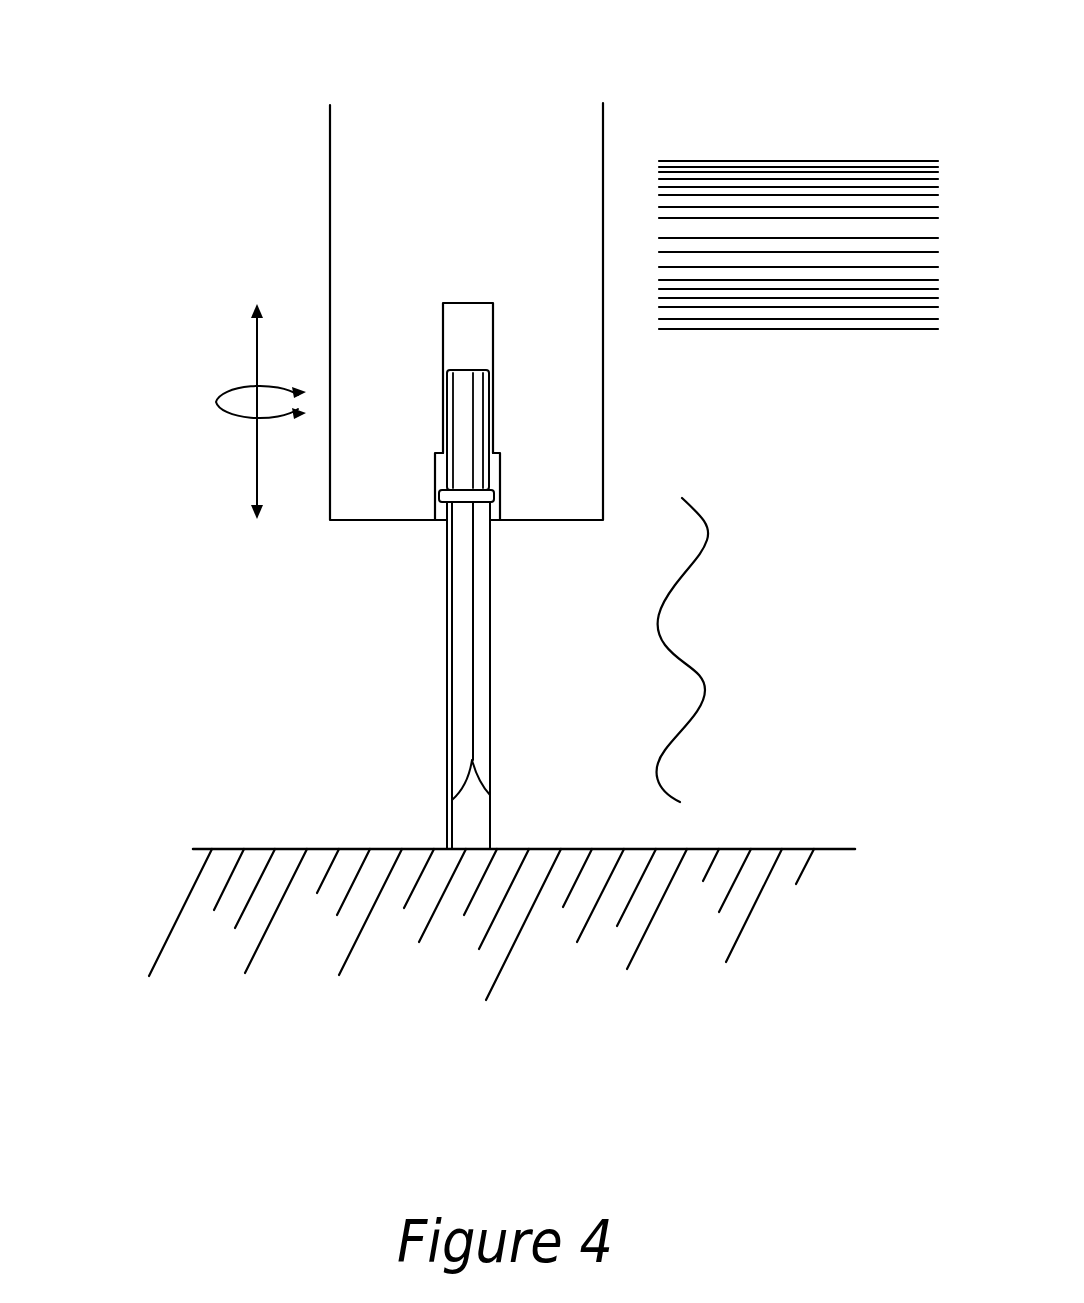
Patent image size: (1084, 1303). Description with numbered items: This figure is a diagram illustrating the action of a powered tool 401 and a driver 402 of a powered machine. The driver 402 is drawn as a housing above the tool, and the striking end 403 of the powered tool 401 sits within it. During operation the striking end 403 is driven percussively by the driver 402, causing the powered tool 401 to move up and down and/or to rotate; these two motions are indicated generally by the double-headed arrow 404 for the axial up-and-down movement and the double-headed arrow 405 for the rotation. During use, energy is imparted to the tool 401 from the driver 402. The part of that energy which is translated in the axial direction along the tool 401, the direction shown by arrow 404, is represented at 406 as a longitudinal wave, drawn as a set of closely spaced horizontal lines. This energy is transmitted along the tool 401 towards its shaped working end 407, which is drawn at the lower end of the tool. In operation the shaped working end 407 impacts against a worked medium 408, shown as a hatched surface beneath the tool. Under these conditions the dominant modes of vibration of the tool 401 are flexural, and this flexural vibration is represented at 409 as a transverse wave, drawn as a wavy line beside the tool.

The powered tool 401 is at (455, 624).
The driver 402 is at (397, 208).
The striking end 403 is at (463, 413).
The double-headed arrow 404 is at (257, 473).
The double-headed arrow 405 is at (216, 402).
The longitudinal wave 406 is at (778, 233).
The shaped working end 407 is at (468, 828).
The worked medium 408 is at (552, 915).
The transverse wave 409 is at (700, 670).